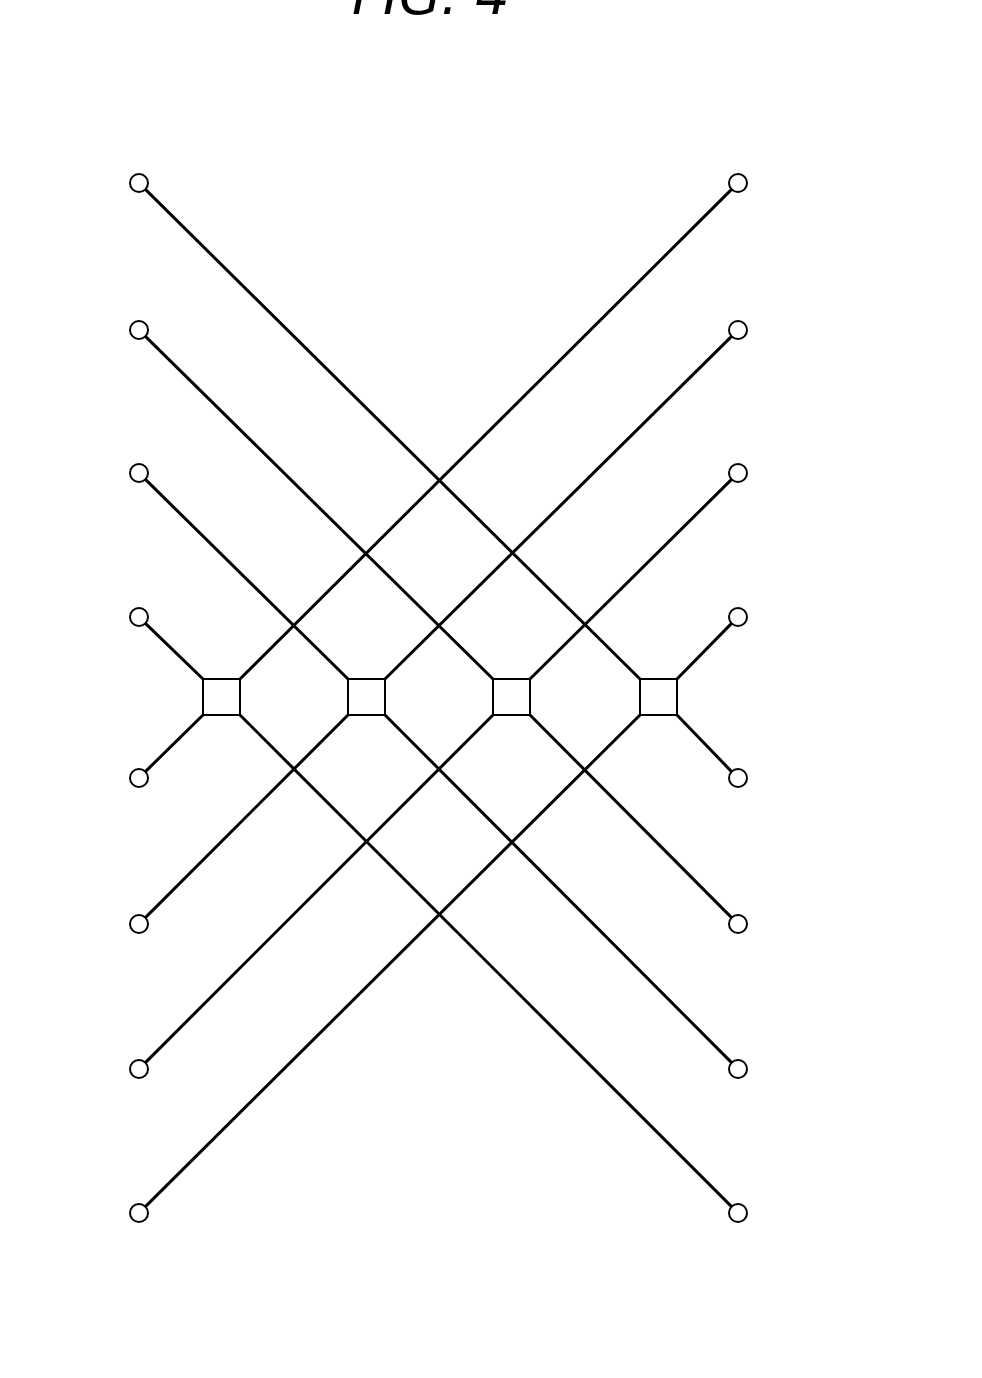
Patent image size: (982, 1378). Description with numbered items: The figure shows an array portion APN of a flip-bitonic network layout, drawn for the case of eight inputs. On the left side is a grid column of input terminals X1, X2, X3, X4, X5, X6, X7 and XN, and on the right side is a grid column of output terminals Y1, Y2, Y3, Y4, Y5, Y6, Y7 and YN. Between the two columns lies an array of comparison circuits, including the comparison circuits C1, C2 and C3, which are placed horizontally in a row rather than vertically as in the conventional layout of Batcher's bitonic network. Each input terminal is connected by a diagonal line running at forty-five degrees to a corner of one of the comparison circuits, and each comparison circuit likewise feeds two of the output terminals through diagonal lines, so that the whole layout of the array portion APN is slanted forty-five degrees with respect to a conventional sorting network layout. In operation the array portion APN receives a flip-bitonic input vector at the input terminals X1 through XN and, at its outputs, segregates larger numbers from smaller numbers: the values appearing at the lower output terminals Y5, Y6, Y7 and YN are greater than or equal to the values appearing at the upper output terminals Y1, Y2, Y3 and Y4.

The array portion APN is at (458, 156).
The comparison circuit C1 is at (221, 716).
The comparison circuit C2 is at (368, 716).
The comparison circuit C3 is at (512, 716).
The input terminal X1 is at (367, 423).
The input terminal X2 is at (293, 496).
The input terminal X3 is at (221, 568).
The input terminal X4 is at (148, 640).
The input terminal X5 is at (148, 763).
The input terminal X6 is at (221, 835).
The input terminal X7 is at (293, 907).
The input terminal XN is at (367, 982).
The output terminal Y1 is at (517, 423).
The output terminal Y2 is at (590, 496).
The output terminal Y3 is at (662, 568).
The output terminal Y4 is at (736, 639).
The output terminal Y5 is at (736, 763).
The output terminal Y6 is at (662, 838).
The output terminal Y7 is at (590, 914).
The output terminal YN is at (519, 991).